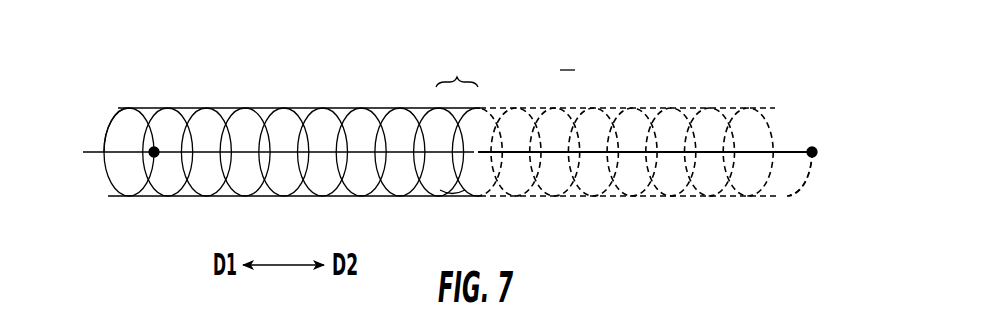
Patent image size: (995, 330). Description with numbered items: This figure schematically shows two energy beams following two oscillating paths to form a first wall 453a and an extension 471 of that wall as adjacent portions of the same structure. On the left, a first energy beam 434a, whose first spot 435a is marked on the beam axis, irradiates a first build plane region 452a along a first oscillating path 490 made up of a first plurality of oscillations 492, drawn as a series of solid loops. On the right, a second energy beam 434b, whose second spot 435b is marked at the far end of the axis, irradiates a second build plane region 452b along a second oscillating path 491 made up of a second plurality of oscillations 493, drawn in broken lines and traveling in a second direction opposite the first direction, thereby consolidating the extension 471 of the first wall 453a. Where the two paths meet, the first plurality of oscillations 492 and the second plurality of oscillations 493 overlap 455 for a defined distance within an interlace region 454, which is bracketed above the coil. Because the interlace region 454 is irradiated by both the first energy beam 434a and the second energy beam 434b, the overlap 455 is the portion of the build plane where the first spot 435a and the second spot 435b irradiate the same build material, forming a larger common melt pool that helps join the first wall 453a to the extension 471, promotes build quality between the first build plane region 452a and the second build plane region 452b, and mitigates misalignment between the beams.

The first energy beam 434a is at (108, 120).
The first spot 435a is at (157, 147).
The first oscillating path 490 is at (458, 101).
The first plurality of oscillations 492 is at (325, 132).
The interlace region 454 is at (457, 63).
The first wall 453a is at (567, 67).
The second plurality of oscillations 493 is at (665, 132).
The second oscillating path 491 is at (705, 107).
The second spot 435b is at (815, 150).
The second energy beam 434b is at (807, 173).
The first build plane region 452a is at (207, 208).
The overlap 455 is at (455, 188).
The extension 471 is at (588, 205).
The second build plane region 452b is at (755, 210).